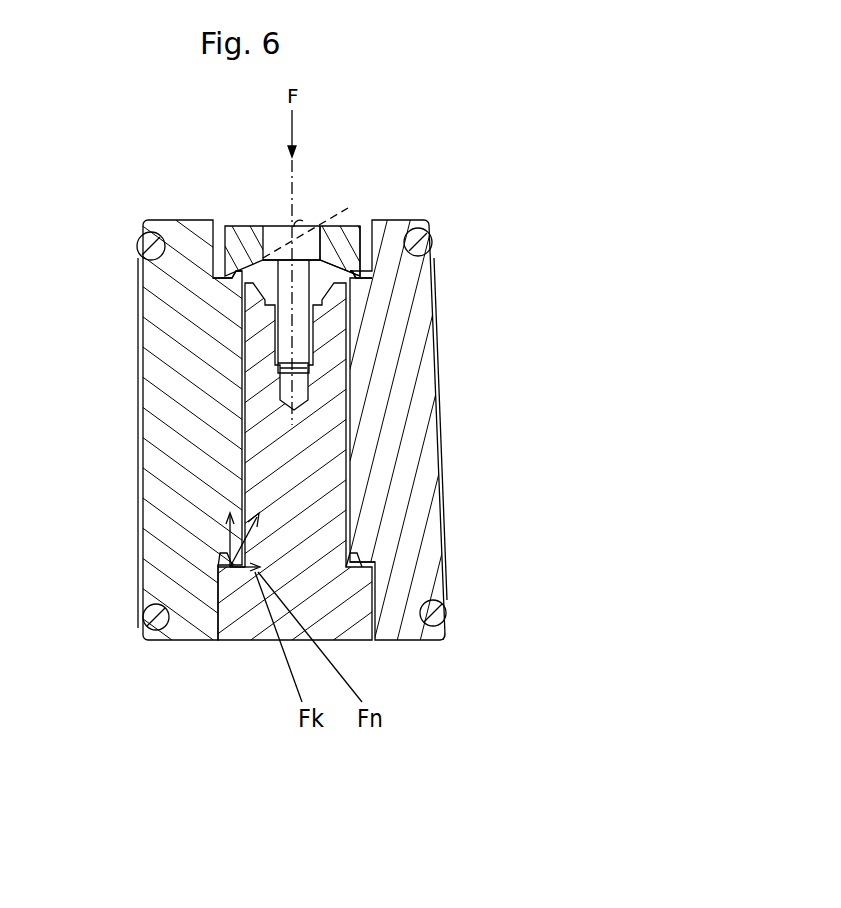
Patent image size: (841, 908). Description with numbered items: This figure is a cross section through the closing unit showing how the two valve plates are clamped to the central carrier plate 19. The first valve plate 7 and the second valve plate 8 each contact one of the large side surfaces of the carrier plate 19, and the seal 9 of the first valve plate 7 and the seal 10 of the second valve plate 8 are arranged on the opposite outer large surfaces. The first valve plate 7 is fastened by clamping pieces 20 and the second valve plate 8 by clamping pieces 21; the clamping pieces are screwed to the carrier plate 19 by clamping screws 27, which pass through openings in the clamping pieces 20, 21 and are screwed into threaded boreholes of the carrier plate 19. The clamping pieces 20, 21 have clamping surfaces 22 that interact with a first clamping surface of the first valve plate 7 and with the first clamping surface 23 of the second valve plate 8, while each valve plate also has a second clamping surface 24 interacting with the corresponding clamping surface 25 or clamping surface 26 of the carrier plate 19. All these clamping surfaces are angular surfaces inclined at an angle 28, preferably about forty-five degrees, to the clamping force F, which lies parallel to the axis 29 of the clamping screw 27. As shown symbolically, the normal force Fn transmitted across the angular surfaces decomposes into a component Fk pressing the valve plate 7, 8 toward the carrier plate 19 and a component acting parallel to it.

The first valve plate 7 is at (165, 407).
The second valve plate 8 is at (405, 390).
The seal 9 is at (158, 622).
The seal 10 is at (438, 616).
The carrier plate 19 is at (328, 457).
The clamping pieces 20 is at (242, 233).
The clamping pieces 21 is at (358, 232).
The clamping surfaces 22 is at (232, 290).
The first clamping surface 23 is at (368, 272).
The second clamping surface 24 is at (232, 570).
The clamping surface 25 is at (238, 530).
The clamping surface 26 is at (363, 555).
The clamping screws 27 is at (342, 227).
The angle 28 is at (298, 228).
The axis 29 is at (293, 355).